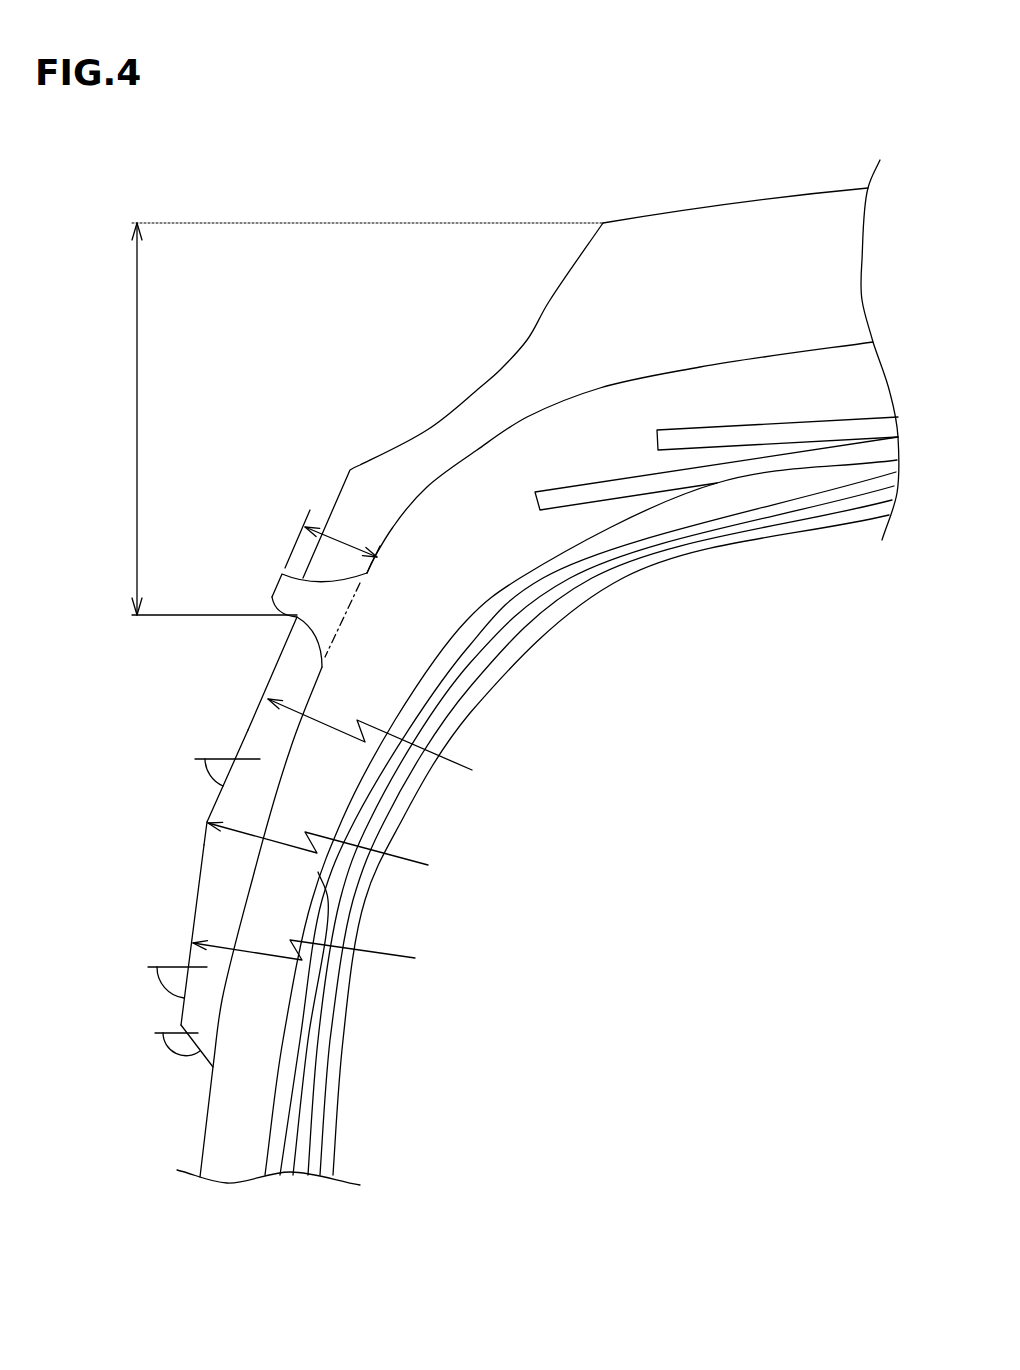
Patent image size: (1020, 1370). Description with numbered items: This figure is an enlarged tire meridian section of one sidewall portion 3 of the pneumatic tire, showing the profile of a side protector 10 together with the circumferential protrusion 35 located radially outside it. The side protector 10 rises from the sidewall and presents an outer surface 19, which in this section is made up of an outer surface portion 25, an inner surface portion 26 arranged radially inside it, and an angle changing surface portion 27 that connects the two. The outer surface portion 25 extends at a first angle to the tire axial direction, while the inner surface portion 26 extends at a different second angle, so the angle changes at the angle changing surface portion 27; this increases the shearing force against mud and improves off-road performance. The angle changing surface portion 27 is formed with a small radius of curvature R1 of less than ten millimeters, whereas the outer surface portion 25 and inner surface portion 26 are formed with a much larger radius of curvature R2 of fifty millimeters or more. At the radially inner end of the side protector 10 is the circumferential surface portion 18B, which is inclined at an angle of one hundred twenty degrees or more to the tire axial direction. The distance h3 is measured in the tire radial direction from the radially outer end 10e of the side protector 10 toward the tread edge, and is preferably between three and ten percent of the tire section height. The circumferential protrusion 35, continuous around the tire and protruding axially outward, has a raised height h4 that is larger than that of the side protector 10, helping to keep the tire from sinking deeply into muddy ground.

The sidewall portion 3 is at (92, 705).
The side protector 10 is at (220, 868).
The radially outer end of the side protector 10e is at (293, 618).
The circumferential surface portion 18B is at (210, 1067).
The outer surface 19 is at (275, 677).
The outer surface portion 25 is at (252, 725).
The inner surface portion 26 is at (193, 920).
The angle changing surface portion 27 is at (203, 821).
The circumferential protrusion 35 is at (283, 574).
The distance h3 is at (349, 419).
The raised height h4 is at (342, 540).
The radius of curvature R1 is at (339, 853).
The radius of curvature R2 is at (354, 836).